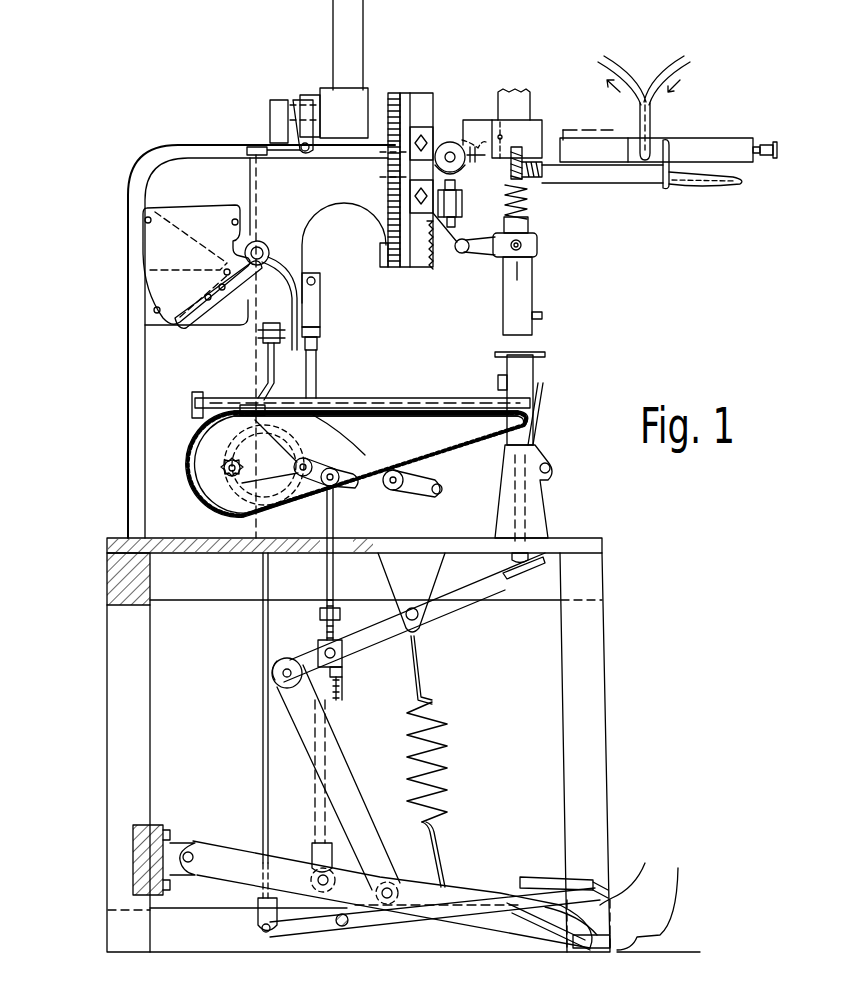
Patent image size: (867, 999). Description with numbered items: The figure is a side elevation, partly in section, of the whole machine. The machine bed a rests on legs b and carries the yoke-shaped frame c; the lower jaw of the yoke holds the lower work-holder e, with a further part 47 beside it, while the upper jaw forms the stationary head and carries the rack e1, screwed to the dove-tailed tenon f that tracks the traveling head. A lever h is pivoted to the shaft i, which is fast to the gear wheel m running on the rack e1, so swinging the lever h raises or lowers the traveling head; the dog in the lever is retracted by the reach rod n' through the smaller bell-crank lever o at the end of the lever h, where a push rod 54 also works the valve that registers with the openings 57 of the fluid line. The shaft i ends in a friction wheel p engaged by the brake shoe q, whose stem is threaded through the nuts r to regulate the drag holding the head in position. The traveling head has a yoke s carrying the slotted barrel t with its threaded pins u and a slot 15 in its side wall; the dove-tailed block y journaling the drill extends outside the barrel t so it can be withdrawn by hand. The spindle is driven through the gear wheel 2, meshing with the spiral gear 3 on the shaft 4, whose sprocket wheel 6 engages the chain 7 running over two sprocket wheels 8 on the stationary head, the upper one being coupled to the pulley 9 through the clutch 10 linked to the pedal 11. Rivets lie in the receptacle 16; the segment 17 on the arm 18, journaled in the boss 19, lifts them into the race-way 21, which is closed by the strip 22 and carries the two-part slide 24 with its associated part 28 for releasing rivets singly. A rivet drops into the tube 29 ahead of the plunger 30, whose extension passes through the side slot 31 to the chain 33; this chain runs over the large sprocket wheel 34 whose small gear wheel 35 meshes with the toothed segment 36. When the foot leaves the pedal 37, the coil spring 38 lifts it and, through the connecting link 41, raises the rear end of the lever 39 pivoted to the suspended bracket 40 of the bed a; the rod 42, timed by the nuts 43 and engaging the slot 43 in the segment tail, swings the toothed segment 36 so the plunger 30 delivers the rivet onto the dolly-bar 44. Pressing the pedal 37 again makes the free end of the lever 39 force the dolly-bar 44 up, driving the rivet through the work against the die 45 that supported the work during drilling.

The gear wheel 2 is at (602, 173).
The spiral gear 3 is at (514, 122).
The shaft 4 is at (505, 125).
The sprocket wheel 6 is at (388, 200).
The chain 7 is at (388, 180).
The sprocket wheels 8 is at (400, 97).
The pulley 9 is at (345, 92).
The clutch 10 is at (322, 98).
The pedal 11 is at (522, 876).
The slot 15 is at (532, 314).
The receptacle 16 is at (212, 192).
The segment 17 is at (128, 272).
The arm 18 is at (228, 300).
The boss 19 is at (264, 243).
The race-way 21 is at (320, 304).
The strip 22 is at (285, 280).
The two-part slide 24 is at (320, 339).
The link 28 is at (276, 386).
The tube 29 is at (400, 398).
The plunger 30 is at (248, 402).
The side slot 31 is at (435, 408).
The chain 33 is at (355, 408).
The large sprocket wheel 34 is at (218, 469).
The small gear wheel 35 is at (245, 486).
The toothed segment 36 is at (285, 437).
The pedal 37 is at (520, 957).
The coil spring 38 is at (447, 800).
The lever 39 is at (445, 622).
The suspended bracket 40 is at (411, 592).
The connecting link 41 is at (345, 764).
The rod 42 is at (335, 580).
The nuts 43 is at (345, 480).
The dolly-bar 44 is at (535, 562).
The die 45 is at (498, 382).
The link 47 is at (545, 402).
The push rod 54 is at (765, 142).
The openings 57 is at (643, 160).
The machine bed a is at (448, 538).
The legs b is at (150, 712).
The yoke-shaped frame c is at (128, 372).
The lower work-holder e is at (533, 369).
The dove-tailed tenon f is at (412, 270).
The rack e1 is at (432, 252).
The lever h is at (722, 138).
The shaft i is at (448, 150).
The gear wheel m is at (478, 135).
The reach rod n' is at (601, 204).
The bell-crank lever o is at (710, 188).
The friction wheel p is at (450, 155).
The brake shoe q is at (528, 207).
The nuts r is at (462, 212).
The yoke s is at (538, 245).
The barrel t is at (503, 302).
The threaded pins u is at (522, 252).
The dove-tailed block y is at (544, 318).